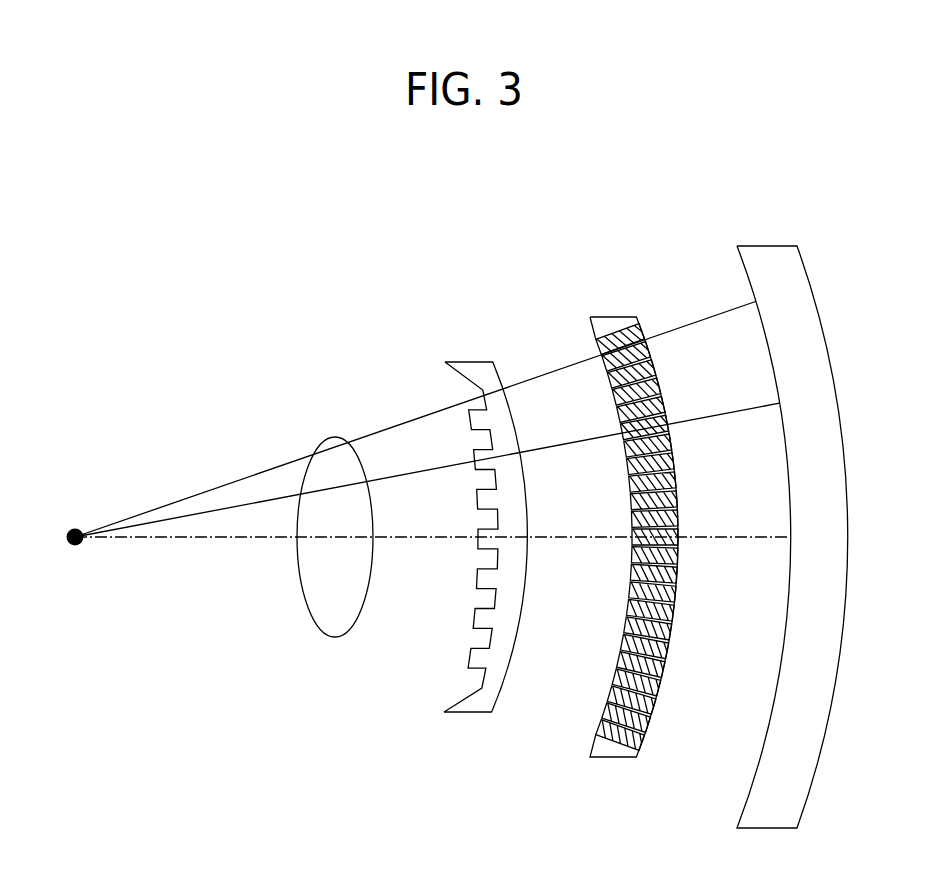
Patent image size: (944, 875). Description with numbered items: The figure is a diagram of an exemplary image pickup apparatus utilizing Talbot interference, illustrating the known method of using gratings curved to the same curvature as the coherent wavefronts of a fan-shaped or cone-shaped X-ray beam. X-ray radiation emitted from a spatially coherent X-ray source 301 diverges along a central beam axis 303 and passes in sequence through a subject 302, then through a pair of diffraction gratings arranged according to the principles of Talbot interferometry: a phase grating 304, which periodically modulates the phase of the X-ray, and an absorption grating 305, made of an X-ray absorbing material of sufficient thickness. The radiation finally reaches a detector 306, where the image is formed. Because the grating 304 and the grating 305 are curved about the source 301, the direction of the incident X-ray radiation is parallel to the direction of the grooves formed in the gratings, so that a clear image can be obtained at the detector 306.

The light source (point source) and light rays 301 is at (74, 530).
The lens 302 is at (333, 437).
The optical axis 303 is at (712, 538).
The stepped (Fresnel-type) lens element 304 is at (473, 372).
The curved array element with hatched segments 305 is at (617, 327).
The curved plate / outer arc member 306 is at (757, 255).